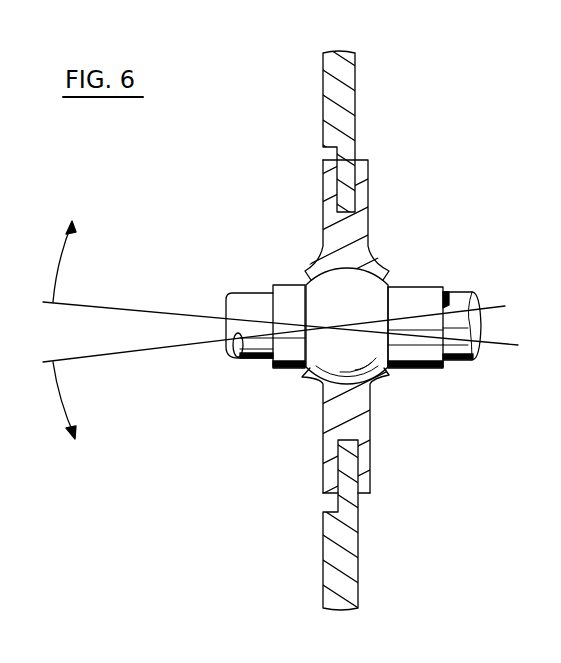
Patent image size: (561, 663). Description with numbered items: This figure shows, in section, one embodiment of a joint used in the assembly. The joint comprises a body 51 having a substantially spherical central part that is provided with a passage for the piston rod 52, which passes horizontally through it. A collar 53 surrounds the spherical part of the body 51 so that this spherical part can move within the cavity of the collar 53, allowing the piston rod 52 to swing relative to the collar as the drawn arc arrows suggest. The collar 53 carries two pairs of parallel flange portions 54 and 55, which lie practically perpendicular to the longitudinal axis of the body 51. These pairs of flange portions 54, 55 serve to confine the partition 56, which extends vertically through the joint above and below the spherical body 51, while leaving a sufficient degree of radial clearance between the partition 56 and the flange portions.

The body 51 is at (419, 287).
The piston rod 52 is at (478, 357).
The collar 53 is at (320, 390).
The flange portions 54 is at (322, 182).
The flange portions 55 is at (323, 466).
The partition 56 is at (348, 80).